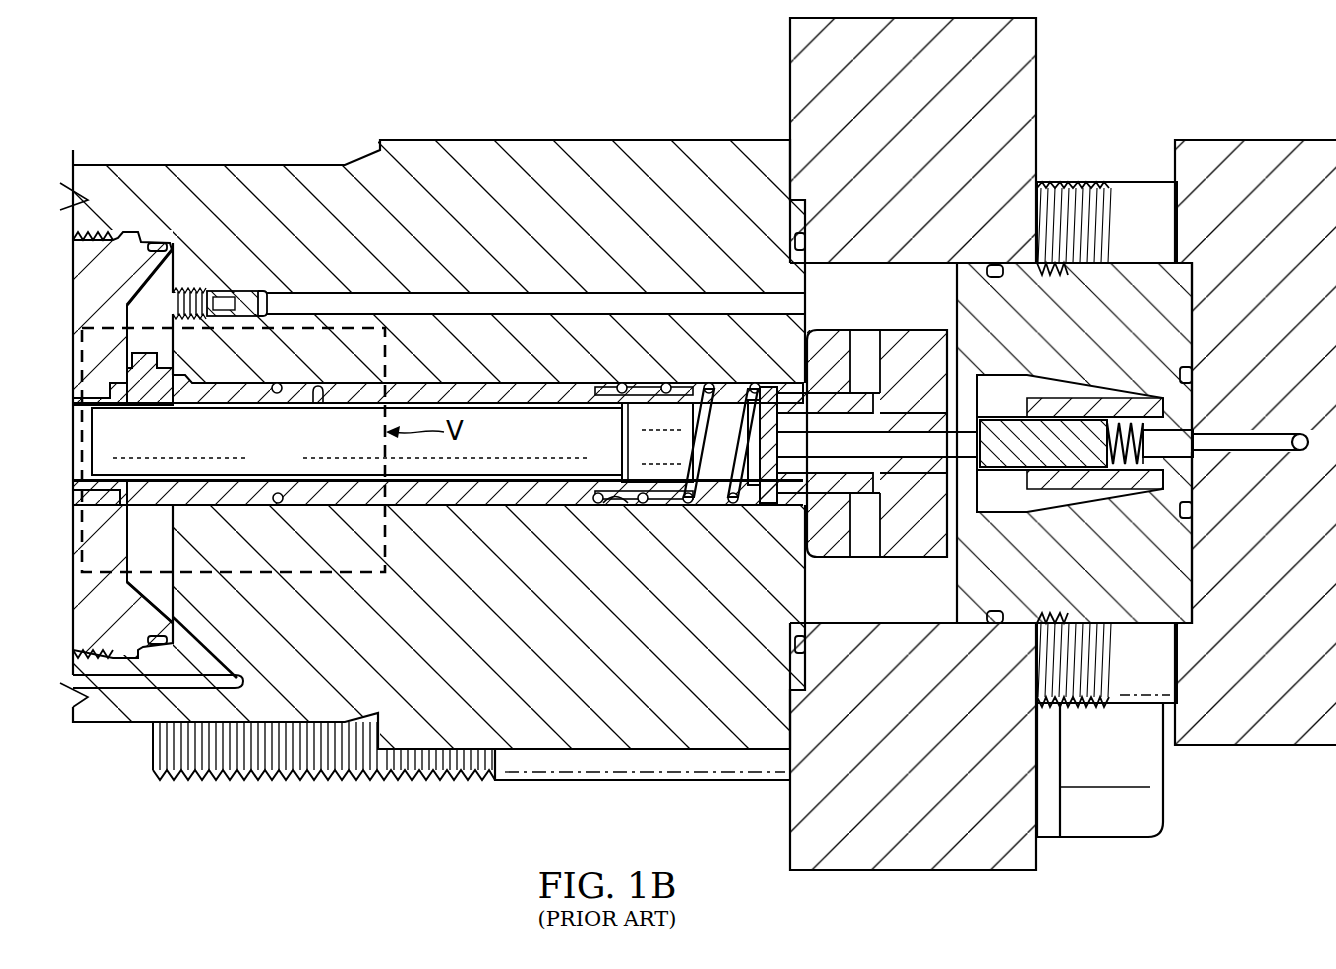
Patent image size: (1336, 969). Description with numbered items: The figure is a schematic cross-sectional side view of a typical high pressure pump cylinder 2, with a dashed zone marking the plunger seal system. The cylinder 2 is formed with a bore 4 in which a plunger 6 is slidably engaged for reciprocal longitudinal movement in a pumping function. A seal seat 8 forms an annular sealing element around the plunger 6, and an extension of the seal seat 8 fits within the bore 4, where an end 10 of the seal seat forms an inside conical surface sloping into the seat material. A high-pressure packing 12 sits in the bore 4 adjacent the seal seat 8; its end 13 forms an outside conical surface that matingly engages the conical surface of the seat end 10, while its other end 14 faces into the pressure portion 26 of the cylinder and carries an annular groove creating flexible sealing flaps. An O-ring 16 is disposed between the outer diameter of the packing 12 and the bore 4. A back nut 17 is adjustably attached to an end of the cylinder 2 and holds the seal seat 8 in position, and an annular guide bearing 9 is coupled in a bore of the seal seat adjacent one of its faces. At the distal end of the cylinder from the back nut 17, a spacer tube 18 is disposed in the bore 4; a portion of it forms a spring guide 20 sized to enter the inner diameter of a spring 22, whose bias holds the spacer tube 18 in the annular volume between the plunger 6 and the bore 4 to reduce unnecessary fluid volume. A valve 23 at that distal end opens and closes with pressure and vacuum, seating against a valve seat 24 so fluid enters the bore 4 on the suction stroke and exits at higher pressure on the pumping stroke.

The high pressure cylinder 2 is at (598, 738).
The bore 4 is at (630, 502).
The plunger 6 is at (486, 476).
The seal seat 8 is at (150, 352).
The annular guide bearing 9 is at (108, 392).
The end of the seal seat 10 is at (196, 504).
The high-pressure packing 12 is at (357, 441).
The end of the high-pressure packing 13 is at (188, 401).
The other end of the high-pressure packing 14 is at (318, 402).
The O-ring 16 is at (278, 384).
The back nut 17 is at (136, 256).
The spacer tube 18 is at (478, 382).
The spring guide 20 is at (640, 400).
The spring 22 is at (742, 386).
The valve 23 is at (766, 382).
The valve seat 24 is at (912, 340).
The pressure portion 26 is at (657, 442).